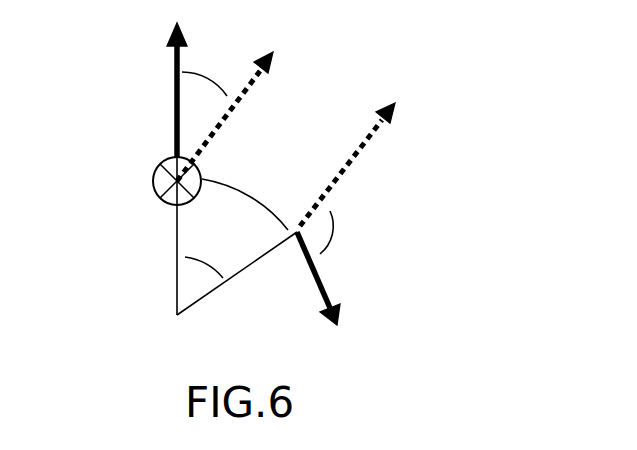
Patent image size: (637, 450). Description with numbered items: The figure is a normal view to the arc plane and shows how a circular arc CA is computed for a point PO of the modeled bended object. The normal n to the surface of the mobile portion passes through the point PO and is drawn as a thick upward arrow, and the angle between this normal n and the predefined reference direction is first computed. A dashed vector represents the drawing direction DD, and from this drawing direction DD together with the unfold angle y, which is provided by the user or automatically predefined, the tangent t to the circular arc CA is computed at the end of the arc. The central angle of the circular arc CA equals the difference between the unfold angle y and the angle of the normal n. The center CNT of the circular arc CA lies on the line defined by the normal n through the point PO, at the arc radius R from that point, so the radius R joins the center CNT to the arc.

The 3D point PO is at (157, 181).
The center of the circular arc CNT is at (173, 252).
The arc radius R is at (237, 273).
The circular arc CA is at (245, 196).
The normal n is at (157, 65).
The drawing direction DD is at (311, 132).
The unfold angle y is at (337, 232).
The tangent t is at (367, 288).